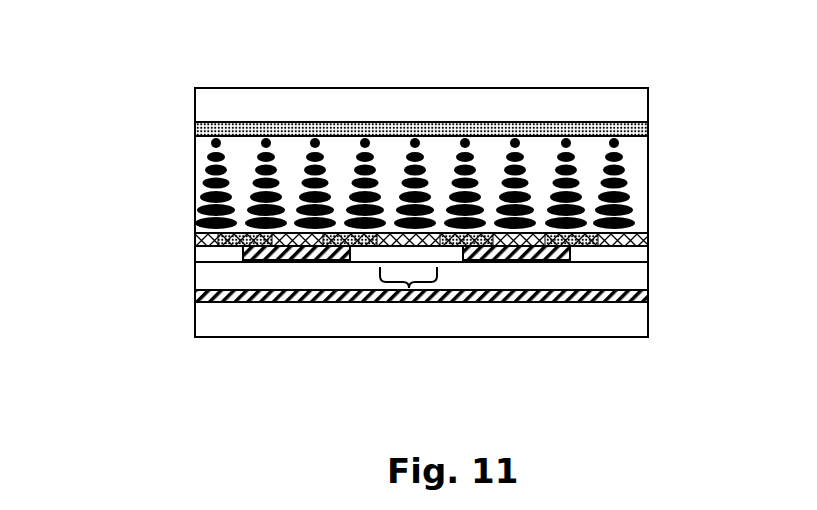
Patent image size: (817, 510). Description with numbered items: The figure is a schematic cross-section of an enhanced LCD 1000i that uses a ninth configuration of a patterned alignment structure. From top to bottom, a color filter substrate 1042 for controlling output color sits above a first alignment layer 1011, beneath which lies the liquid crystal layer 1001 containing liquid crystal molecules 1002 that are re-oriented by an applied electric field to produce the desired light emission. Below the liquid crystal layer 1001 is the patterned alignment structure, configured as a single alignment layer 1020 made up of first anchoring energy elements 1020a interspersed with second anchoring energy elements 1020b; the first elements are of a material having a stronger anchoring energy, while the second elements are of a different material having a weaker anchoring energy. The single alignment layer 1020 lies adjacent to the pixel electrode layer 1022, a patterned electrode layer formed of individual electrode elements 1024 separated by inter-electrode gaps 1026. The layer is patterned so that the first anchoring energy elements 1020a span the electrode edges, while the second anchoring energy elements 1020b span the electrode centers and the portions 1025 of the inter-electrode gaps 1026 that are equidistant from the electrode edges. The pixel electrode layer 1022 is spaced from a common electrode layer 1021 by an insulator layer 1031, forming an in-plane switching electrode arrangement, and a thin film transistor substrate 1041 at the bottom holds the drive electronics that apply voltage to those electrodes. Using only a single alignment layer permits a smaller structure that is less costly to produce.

The enhanced LCD 1000i is at (179, 92).
The color filter substrate 1042 is at (650, 88).
The first alignment layer 1011 is at (650, 123).
The liquid crystal layer 1001 is at (463, 136).
The liquid crystal molecules 1002 is at (567, 175).
The single alignment layer 1020 is at (406, 332).
The first anchoring energy elements 1020a is at (240, 245).
The second anchoring energy elements 1020b is at (533, 240).
The pixel electrode layer 1022 is at (457, 342).
The individual electrode elements 1024 is at (300, 257).
The portions of the inter-electrode gaps 1025 is at (409, 288).
The inter-electrode gaps 1026 is at (372, 257).
The insulator layer 1031 is at (650, 263).
The common electrode layer 1021 is at (650, 291).
The thin film transistor substrate 1041 is at (650, 303).